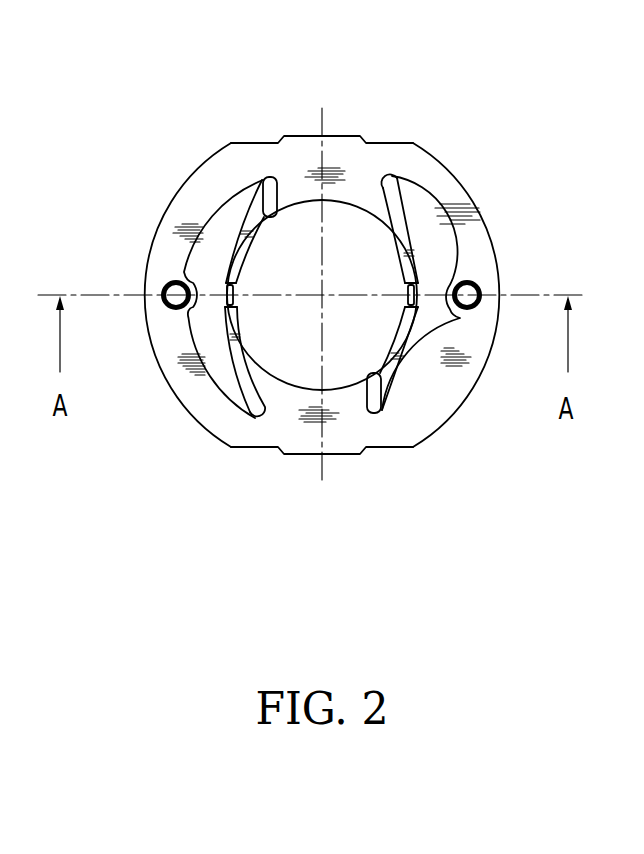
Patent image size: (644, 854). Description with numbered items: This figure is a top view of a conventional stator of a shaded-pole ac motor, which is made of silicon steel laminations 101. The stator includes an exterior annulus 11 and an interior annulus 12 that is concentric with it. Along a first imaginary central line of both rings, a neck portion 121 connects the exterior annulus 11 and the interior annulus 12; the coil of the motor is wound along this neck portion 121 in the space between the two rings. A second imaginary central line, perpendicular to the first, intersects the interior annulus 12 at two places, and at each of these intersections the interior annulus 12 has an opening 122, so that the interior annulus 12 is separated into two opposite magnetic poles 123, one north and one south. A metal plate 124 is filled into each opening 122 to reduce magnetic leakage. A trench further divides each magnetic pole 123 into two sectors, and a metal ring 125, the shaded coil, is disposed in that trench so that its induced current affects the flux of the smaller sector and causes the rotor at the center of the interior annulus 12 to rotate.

The exterior annulus 11 is at (488, 232).
The interior annulus 12 is at (372, 221).
The silicon steel laminations 101 is at (252, 148).
The neck portion 121 is at (383, 172).
The opening 122 is at (214, 289).
The magnetic pole 123 is at (403, 347).
The metal plate 124 is at (196, 362).
The metal ring 125 is at (263, 194).